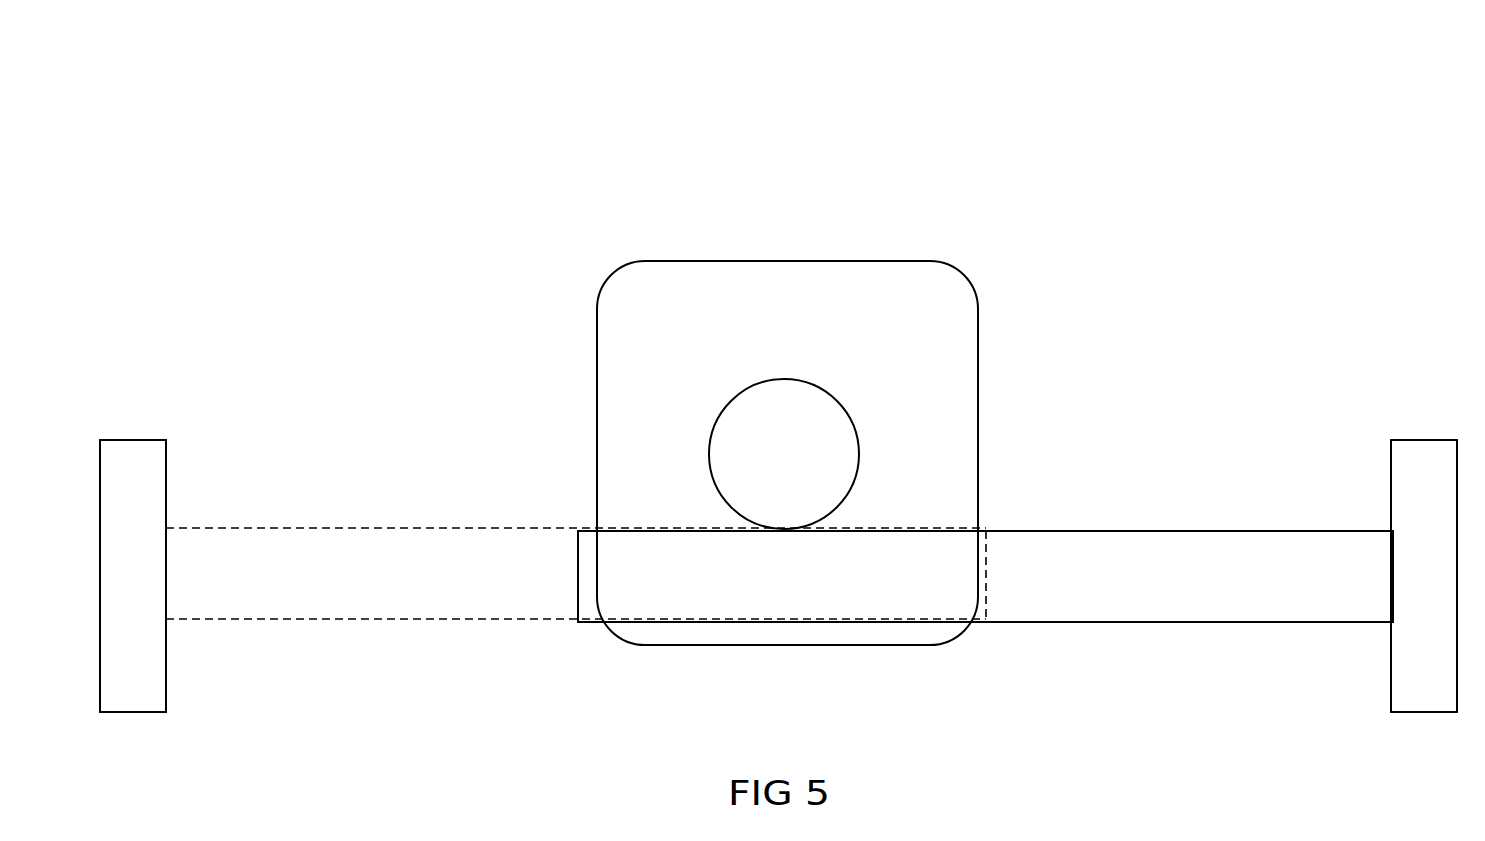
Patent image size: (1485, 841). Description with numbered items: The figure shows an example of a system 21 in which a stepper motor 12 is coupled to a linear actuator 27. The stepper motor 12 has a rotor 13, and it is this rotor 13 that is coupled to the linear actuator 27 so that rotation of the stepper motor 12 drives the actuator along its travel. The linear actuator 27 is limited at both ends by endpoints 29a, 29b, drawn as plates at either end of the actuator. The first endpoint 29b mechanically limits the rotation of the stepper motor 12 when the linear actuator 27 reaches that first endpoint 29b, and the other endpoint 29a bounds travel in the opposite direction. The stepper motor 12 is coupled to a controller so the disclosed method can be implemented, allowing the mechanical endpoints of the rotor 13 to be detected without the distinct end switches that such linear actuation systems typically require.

The system 21 is at (200, 108).
The stepper motor 12 is at (790, 261).
The rotor 13 is at (785, 379).
The linear actuator 27 is at (1315, 531).
The endpoint 29a is at (132, 440).
The first endpoint 29b is at (1425, 440).